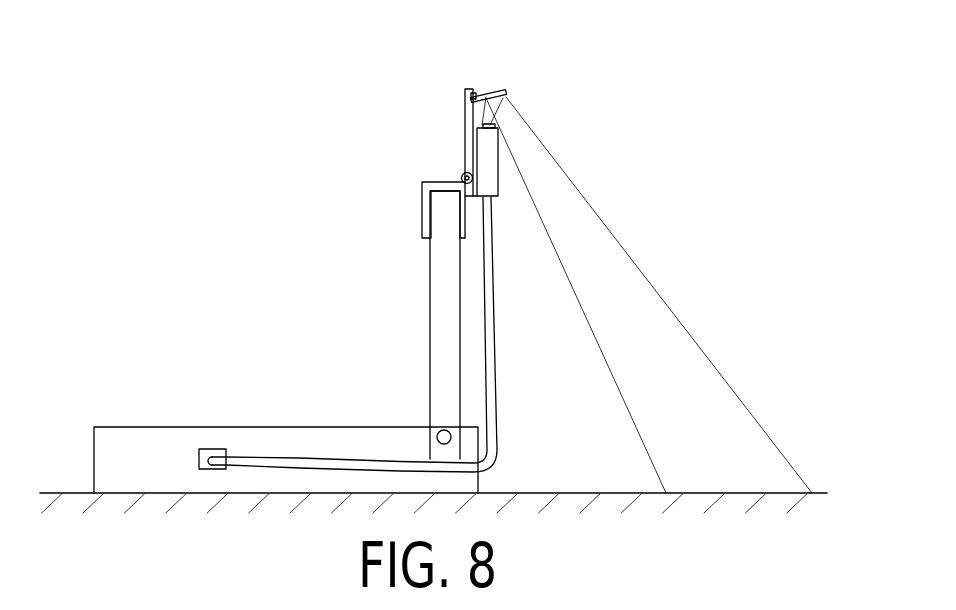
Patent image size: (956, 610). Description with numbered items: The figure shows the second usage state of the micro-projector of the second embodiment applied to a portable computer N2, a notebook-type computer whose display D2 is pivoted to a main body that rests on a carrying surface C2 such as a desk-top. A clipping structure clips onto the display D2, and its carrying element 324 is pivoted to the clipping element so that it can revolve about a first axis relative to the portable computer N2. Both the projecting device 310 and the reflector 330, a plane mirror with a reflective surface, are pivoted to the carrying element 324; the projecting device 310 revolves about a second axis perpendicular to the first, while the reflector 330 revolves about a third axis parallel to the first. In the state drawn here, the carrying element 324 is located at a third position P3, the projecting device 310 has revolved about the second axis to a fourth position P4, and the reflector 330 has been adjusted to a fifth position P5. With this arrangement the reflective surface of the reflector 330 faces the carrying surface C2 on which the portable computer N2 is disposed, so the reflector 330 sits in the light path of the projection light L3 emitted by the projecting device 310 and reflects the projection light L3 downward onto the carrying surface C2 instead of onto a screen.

The reflector 330 is at (503, 88).
The projecting device 310 is at (492, 147).
The carrying element 324 is at (468, 140).
The display D2 is at (440, 312).
The carrying surface C2 is at (82, 477).
The portable computer N2 is at (278, 343).
The projection light L3 is at (687, 277).
The third position P3 is at (470, 63).
The fourth position P4 is at (521, 183).
The fifth position P5 is at (533, 85).